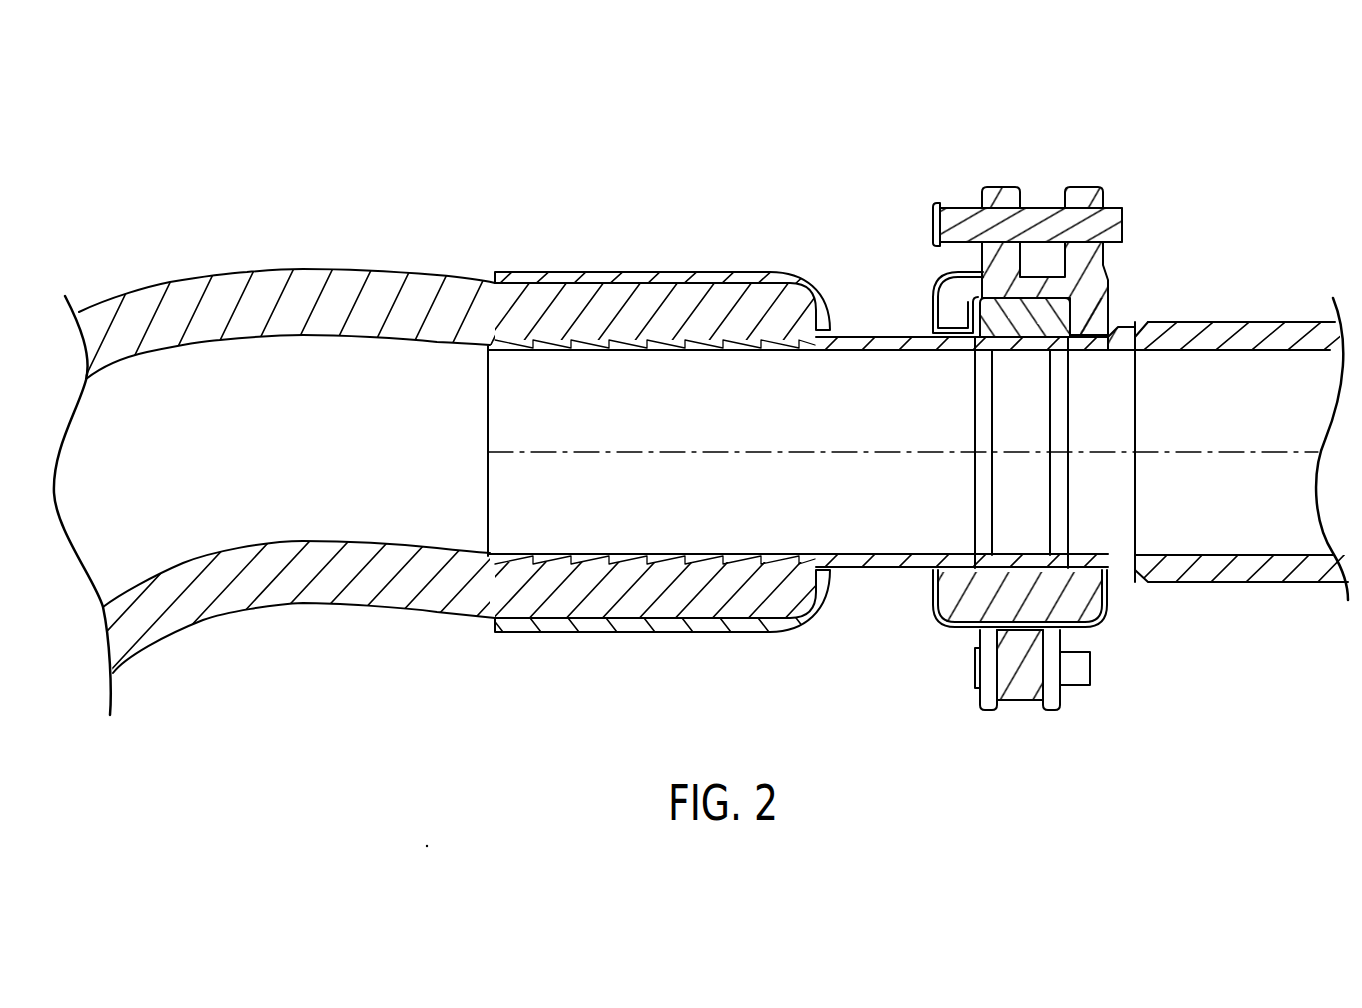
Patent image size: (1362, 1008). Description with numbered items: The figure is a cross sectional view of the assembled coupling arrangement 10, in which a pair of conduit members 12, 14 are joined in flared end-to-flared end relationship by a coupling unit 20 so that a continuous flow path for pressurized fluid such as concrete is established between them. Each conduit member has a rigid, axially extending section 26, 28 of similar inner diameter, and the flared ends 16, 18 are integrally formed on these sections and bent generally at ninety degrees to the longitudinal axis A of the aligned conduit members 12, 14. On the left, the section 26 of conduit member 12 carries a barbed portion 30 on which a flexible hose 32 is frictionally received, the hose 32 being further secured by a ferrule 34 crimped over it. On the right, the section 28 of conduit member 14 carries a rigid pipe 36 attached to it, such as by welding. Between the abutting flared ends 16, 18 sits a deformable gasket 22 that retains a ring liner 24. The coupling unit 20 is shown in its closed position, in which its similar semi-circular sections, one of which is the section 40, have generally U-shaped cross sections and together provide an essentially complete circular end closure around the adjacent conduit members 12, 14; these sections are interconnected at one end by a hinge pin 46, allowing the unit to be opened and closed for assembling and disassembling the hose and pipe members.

The coupling arrangement 10 is at (1028, 396).
The conduit member 12 is at (442, 462).
The conduit member 14 is at (1213, 470).
The flared end 16 is at (985, 312).
The flared end 18 is at (1068, 313).
The coupling unit 20 is at (1112, 255).
The deformable gasket 22 is at (1040, 320).
The ring liner 24 is at (1030, 350).
The axially extending section 26 is at (873, 560).
The axially extending section 28 is at (1116, 337).
The barbed portion 30 is at (637, 352).
The flexible hose 32 is at (343, 273).
The ferrule 34 is at (651, 272).
The rigid pipe 36 is at (1222, 325).
The semi-circular section 40 is at (1095, 607).
The hinge pin 46 is at (956, 222).
The longitudinal axis A is at (1199, 452).